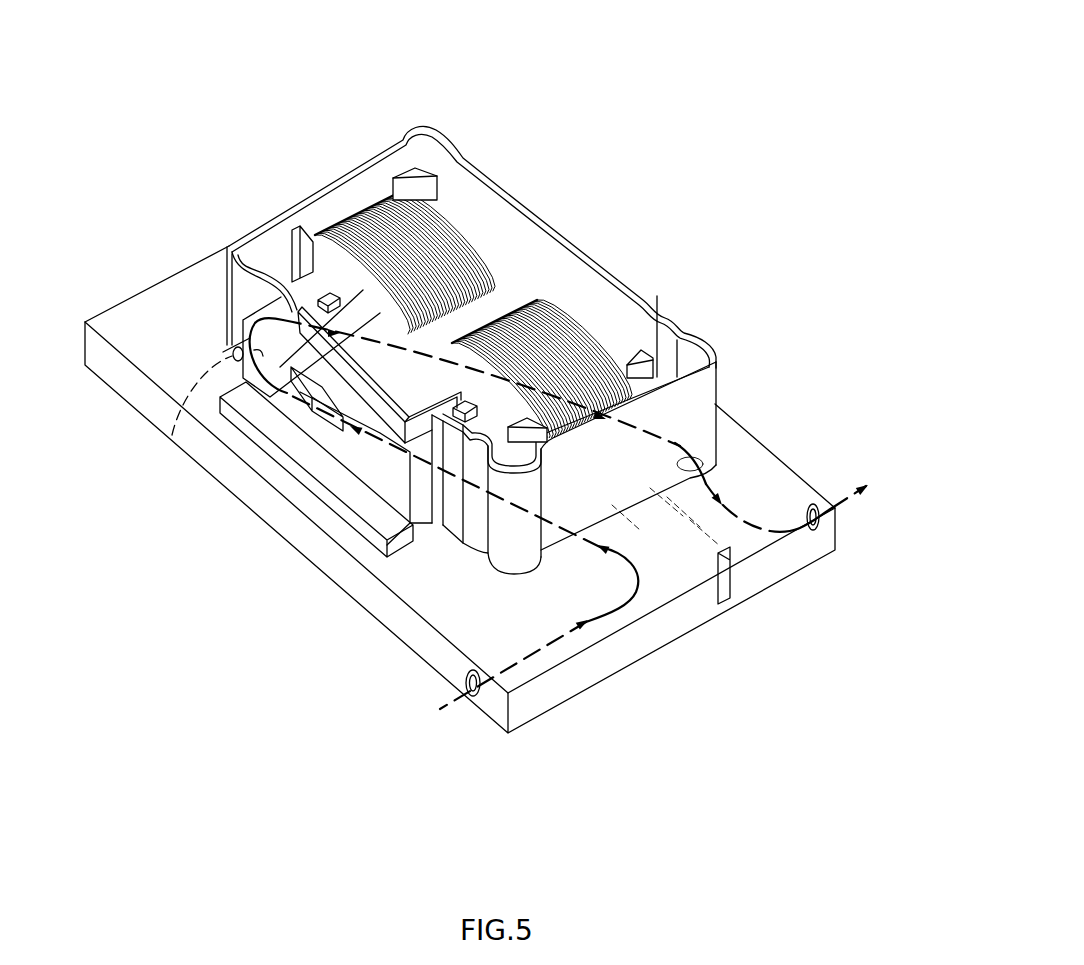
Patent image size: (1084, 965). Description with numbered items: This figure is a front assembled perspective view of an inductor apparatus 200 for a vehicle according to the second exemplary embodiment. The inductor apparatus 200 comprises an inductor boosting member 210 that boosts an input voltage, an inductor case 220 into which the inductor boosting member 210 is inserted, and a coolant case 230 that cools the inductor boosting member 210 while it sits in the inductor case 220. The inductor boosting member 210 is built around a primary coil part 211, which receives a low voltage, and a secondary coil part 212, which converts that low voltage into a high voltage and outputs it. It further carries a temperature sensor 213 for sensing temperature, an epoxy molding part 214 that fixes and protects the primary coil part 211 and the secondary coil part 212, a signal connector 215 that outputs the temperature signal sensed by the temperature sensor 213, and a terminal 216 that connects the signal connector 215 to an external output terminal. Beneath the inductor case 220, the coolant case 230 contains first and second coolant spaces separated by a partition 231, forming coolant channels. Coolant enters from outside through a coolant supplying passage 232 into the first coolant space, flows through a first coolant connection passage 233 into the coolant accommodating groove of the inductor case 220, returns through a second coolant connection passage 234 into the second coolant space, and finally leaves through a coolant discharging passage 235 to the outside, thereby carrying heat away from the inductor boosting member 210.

The inductor apparatus 200 is at (762, 76).
The inductor boosting member 210 is at (708, 122).
The primary coil part 211 is at (473, 272).
The secondary coil part 212 is at (565, 336).
The temperature sensor 213 is at (447, 318).
The epoxy molding part 214 is at (527, 322).
The signal connector 215 is at (400, 325).
The terminal 216 is at (432, 489).
The inductor case 220 is at (698, 417).
The coolant case 230 is at (783, 478).
The partition 231 is at (748, 598).
The coolant supplying passage 232 is at (443, 678).
The first coolant connection passage 233 is at (172, 435).
The second coolant connection passage 234 is at (822, 575).
The coolant discharging passage 235 is at (842, 523).